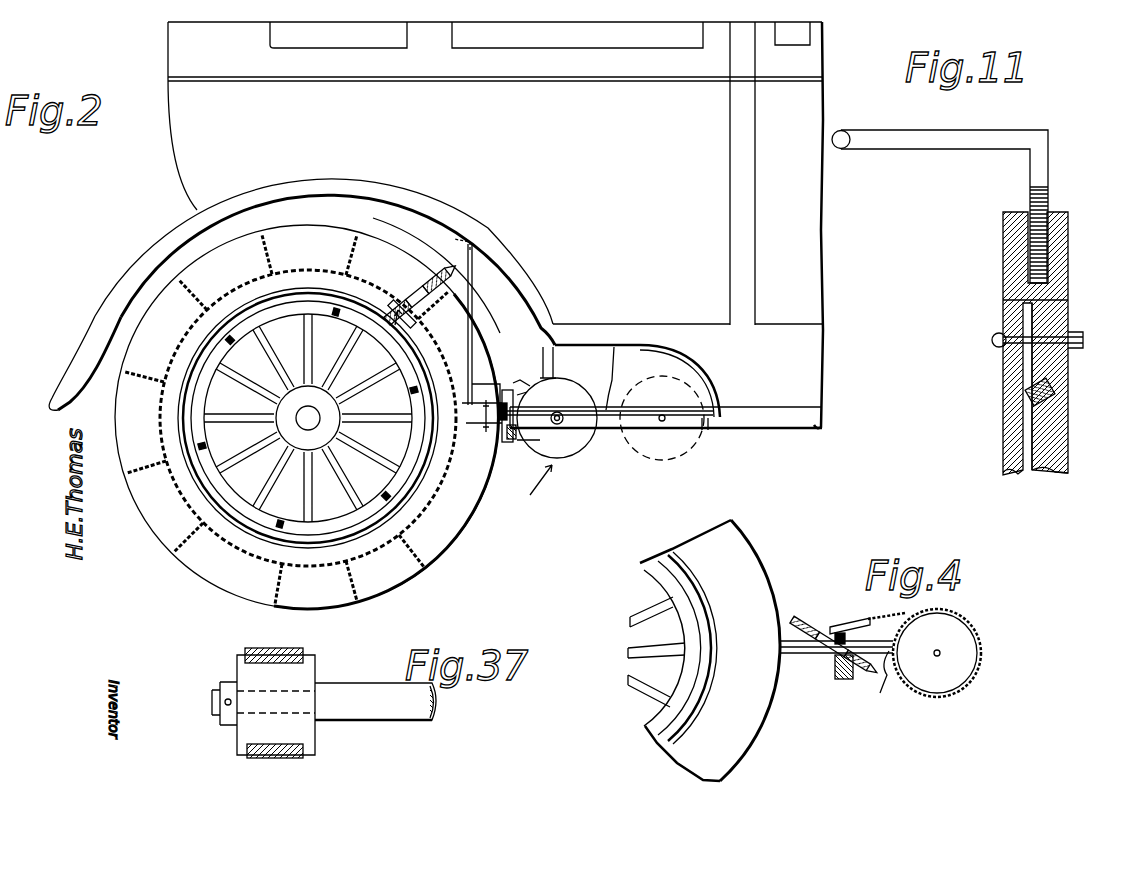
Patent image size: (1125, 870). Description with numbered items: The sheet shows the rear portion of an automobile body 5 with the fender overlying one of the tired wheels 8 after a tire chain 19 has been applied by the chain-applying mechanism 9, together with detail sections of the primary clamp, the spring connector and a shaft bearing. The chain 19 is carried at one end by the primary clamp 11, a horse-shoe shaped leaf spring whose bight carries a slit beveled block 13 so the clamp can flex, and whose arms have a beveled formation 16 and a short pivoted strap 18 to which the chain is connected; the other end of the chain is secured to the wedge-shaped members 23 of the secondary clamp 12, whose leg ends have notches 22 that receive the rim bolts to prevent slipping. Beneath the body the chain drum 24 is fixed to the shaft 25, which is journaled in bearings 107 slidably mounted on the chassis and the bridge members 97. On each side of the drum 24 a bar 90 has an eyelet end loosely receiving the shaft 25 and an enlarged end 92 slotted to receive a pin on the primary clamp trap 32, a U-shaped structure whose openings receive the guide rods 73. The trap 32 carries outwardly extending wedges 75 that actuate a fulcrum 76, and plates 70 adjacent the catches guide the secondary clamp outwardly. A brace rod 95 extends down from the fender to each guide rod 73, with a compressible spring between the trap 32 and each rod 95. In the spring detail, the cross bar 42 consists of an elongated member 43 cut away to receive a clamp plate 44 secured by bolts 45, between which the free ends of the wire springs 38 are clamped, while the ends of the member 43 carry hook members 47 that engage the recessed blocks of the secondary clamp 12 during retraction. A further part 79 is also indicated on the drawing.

In FIG. 2, the body of an automobile 5 is at (176, 150).
In FIG. 2, the tired wheels 8 is at (223, 573).
In FIG. 4, the tired wheels 8 is at (745, 578).
In FIG. 2, the tire chain 19 is at (190, 552).
In FIG. 4, the tire chain 19 is at (960, 625).
In FIG. 2, the secondary clamp 12 is at (403, 370).
In FIG. 2, the notches 22 is at (350, 332).
In FIG. 2, the wedges 75 is at (440, 427).
In FIG. 2, the beveled block 13 is at (404, 292).
In FIG. 2, the wedge-shaped member 23 is at (425, 312).
In FIG. 2, the brace rod 95 is at (478, 330).
In FIG. 2, the hook members 47 is at (507, 390).
In FIG. 11, the hook members 47 is at (960, 145).
In FIG. 2, the fulcrum 76 is at (485, 429).
In FIG. 2, the primary clamp trap 32 is at (507, 440).
In FIG. 4, the primary clamp trap 32 is at (839, 690).
In FIG. 2, the plates 70 is at (540, 372).
In FIG. 2, the link 79 is at (615, 367).
In FIG. 2, the chain drum 24 is at (576, 452).
In FIG. 4, the chain drum 24 is at (965, 665).
In FIG. 2, the enlarged end 92 is at (525, 414).
In FIG. 2, the shaft 25 is at (560, 420).
In FIG. 37, the shaft 25 is at (358, 692).
In FIG. 4, the shaft 25 is at (937, 653).
In FIG. 2, the bar 90 is at (555, 440).
In FIG. 2, the mechanism 9 is at (541, 488).
In FIG. 2, the bridge members 97 is at (668, 430).
In FIG. 37, the bridge members 97 is at (288, 648).
In FIG. 11, the bolts 45 is at (997, 335).
In FIG. 11, the clamp plate 44 is at (1003, 367).
In FIG. 11, the cross bar 42 is at (991, 400).
In FIG. 11, the wire springs 38 is at (1025, 402).
In FIG. 11, the elongated member 43 is at (1058, 470).
In FIG. 37, the bearings 107 is at (240, 674).
In FIG. 4, the primary clamp 11 is at (813, 610).
In FIG. 4, the beveled formation 16 is at (835, 630).
In FIG. 4, the strap 18 is at (850, 622).
In FIG. 4, the guide rods 73 is at (877, 683).